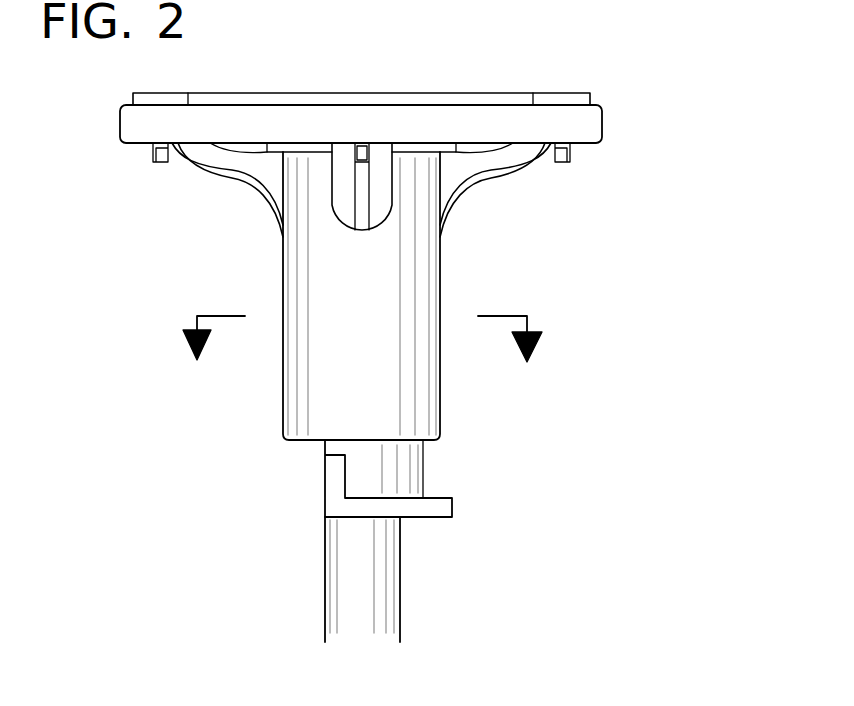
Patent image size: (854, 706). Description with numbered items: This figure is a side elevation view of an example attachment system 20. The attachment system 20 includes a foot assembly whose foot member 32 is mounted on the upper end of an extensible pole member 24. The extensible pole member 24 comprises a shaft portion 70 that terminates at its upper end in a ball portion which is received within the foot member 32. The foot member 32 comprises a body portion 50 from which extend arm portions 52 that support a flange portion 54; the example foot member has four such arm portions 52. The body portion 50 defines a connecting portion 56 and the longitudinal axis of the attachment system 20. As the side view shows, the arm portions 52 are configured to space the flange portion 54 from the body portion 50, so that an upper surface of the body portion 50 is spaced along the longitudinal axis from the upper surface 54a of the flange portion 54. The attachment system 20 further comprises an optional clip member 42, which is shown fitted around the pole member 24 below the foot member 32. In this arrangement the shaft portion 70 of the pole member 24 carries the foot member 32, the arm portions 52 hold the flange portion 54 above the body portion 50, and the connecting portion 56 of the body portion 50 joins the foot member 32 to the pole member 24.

The attachment system 20 is at (148, 305).
The extensible pole member 24 is at (401, 598).
The foot member 32 is at (443, 408).
The clip member 42 is at (453, 502).
The body portion 50 is at (443, 217).
The arm portion 52 is at (220, 175).
The flange portion 54 is at (588, 127).
The upper surface of the flange portion 54a is at (593, 103).
The connecting portion 56 is at (442, 277).
The shaft portion 70 is at (345, 572).